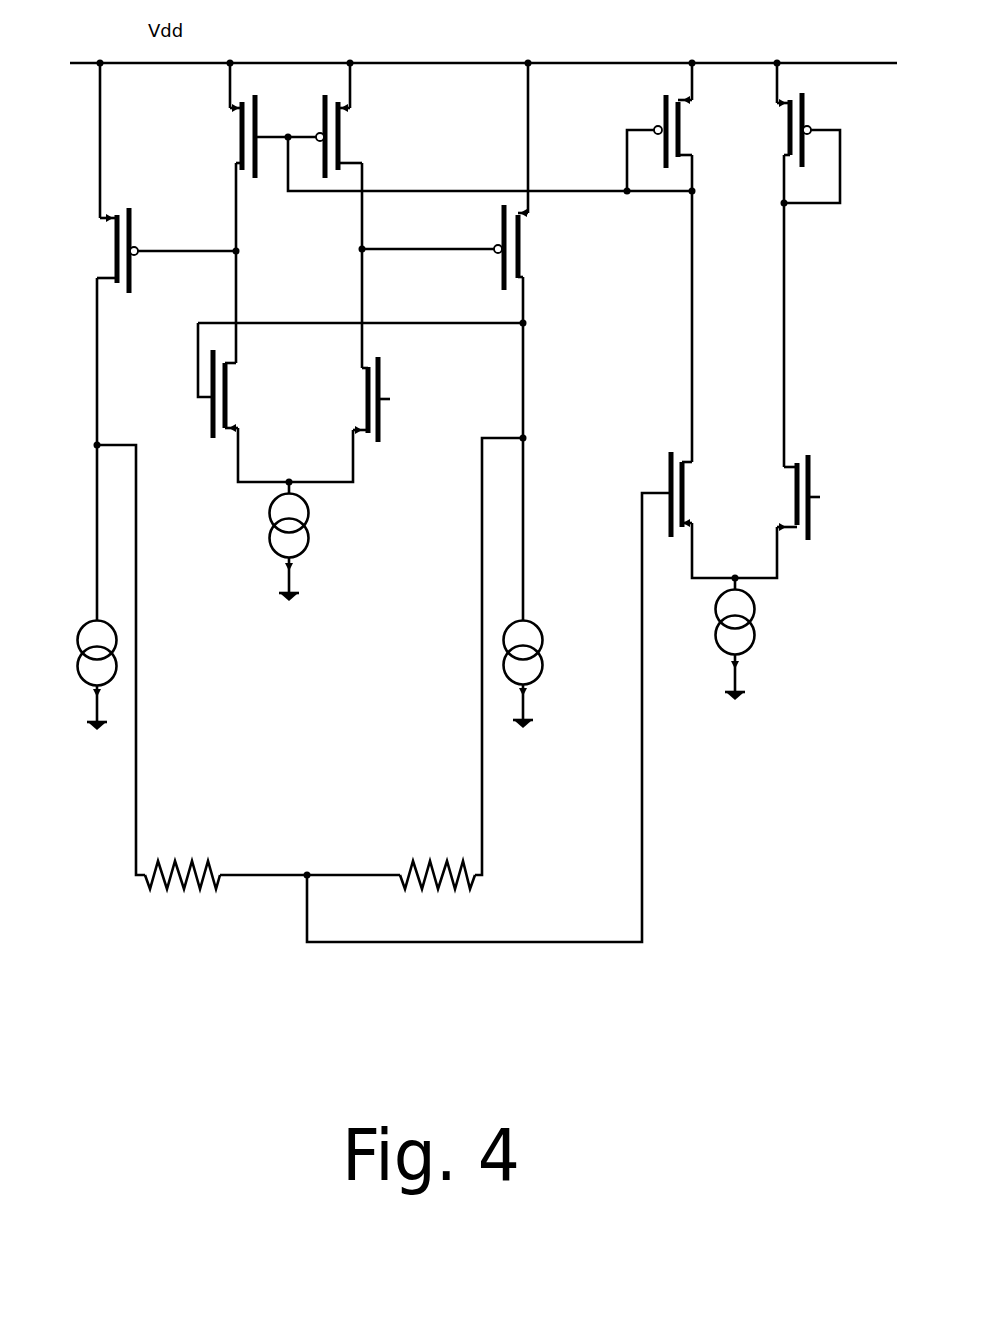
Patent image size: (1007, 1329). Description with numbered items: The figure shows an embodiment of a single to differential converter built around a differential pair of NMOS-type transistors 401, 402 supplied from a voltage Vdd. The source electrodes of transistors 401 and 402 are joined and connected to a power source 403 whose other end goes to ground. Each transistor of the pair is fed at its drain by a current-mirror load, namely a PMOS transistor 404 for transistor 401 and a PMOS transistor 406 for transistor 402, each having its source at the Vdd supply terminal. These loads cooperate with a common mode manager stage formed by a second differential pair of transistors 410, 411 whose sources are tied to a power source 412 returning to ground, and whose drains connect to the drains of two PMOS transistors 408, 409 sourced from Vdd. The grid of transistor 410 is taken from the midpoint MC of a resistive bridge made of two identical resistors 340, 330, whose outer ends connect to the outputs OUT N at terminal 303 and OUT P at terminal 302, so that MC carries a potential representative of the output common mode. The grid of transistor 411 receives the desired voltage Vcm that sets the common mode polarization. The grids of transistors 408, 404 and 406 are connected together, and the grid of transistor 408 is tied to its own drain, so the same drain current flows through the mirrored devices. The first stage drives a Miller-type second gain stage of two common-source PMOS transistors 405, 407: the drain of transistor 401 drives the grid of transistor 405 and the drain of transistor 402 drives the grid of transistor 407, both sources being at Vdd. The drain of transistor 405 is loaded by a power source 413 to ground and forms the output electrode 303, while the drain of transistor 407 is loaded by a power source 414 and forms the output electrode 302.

The output electrode OUT P 302 is at (520, 435).
The output electrode OUT N 303 is at (92, 432).
The resistor 330 is at (423, 860).
The resistor 340 is at (192, 857).
The NMOS transistor 401 is at (233, 417).
The NMOS transistor 402 is at (378, 432).
The power source 403 is at (307, 528).
The PMOS transistor 404 is at (240, 147).
The PMOS transistor 405 is at (110, 252).
The PMOS transistor 406 is at (340, 140).
The PMOS transistor 407 is at (525, 277).
The PMOS transistor 408 is at (660, 118).
The PMOS transistor 409 is at (807, 112).
The transistor 410 is at (670, 452).
The transistor 411 is at (800, 452).
The power source 412 is at (755, 635).
The power source 413 is at (90, 625).
The power source 414 is at (567, 597).